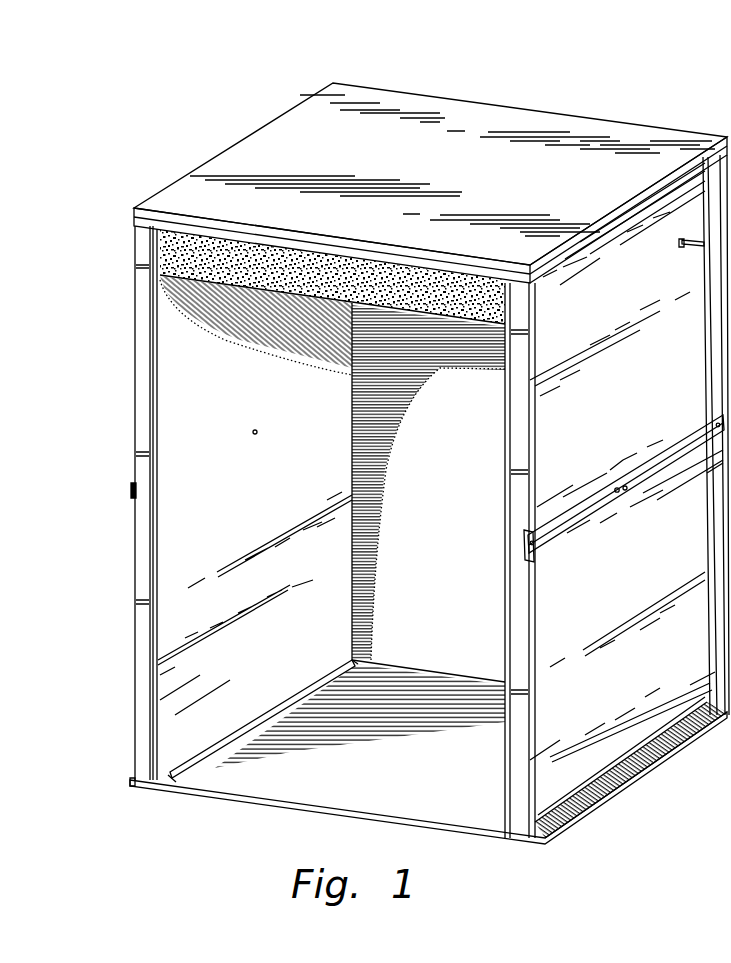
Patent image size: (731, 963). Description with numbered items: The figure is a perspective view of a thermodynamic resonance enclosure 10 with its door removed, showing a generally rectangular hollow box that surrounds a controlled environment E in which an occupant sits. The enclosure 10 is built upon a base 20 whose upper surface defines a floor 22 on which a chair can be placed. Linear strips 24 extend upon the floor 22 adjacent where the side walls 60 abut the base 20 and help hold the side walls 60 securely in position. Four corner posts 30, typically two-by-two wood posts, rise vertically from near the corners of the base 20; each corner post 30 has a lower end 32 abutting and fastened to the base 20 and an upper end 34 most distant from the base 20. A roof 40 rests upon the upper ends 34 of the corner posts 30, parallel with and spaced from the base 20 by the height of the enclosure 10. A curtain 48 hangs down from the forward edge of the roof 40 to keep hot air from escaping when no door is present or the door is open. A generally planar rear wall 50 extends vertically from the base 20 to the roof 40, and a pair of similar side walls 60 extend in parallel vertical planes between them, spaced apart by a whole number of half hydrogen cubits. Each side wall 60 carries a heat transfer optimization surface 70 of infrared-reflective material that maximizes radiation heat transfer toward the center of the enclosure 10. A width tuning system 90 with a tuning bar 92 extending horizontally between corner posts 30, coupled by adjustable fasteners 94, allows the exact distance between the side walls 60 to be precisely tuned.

The enclosure 10 is at (605, 105).
The base 20 is at (470, 838).
The floor 22 is at (422, 764).
The linear strips 24 is at (213, 756).
The corner posts 30 is at (146, 640).
The lower end 32 is at (137, 785).
The upper ends 34 is at (140, 240).
The roof 40 is at (413, 125).
The curtain 48 is at (286, 279).
The rear wall 50 is at (456, 470).
The side walls 60 is at (643, 598).
The heat transfer optimization surface 70 is at (223, 418).
The width tuning system 90 is at (257, 433).
The tuning bar 92 is at (131, 490).
The bracket 94 is at (528, 543).
The controlled environment E is at (345, 482).